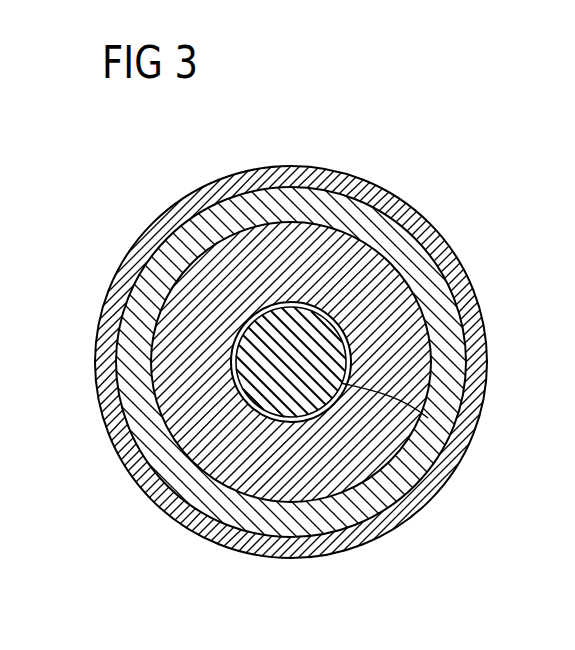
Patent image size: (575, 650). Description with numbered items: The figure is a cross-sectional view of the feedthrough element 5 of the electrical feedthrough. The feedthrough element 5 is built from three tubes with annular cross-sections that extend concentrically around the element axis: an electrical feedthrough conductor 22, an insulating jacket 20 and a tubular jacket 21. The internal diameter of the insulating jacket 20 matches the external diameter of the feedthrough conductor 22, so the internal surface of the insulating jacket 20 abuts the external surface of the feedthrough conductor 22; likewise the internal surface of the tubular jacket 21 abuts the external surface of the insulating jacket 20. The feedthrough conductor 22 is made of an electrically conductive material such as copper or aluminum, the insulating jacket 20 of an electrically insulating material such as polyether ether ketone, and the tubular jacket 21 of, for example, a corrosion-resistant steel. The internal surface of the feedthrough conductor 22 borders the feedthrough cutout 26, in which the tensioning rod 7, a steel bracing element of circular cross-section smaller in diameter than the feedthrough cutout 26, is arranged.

The feedthrough element 5 is at (128, 201).
The tensioning rod 7 is at (262, 375).
The insulating jacket 20 is at (468, 272).
The tubular jacket 21 is at (400, 207).
The feedthrough conductor 22 is at (390, 346).
The feedthrough cutout 26 is at (457, 432).